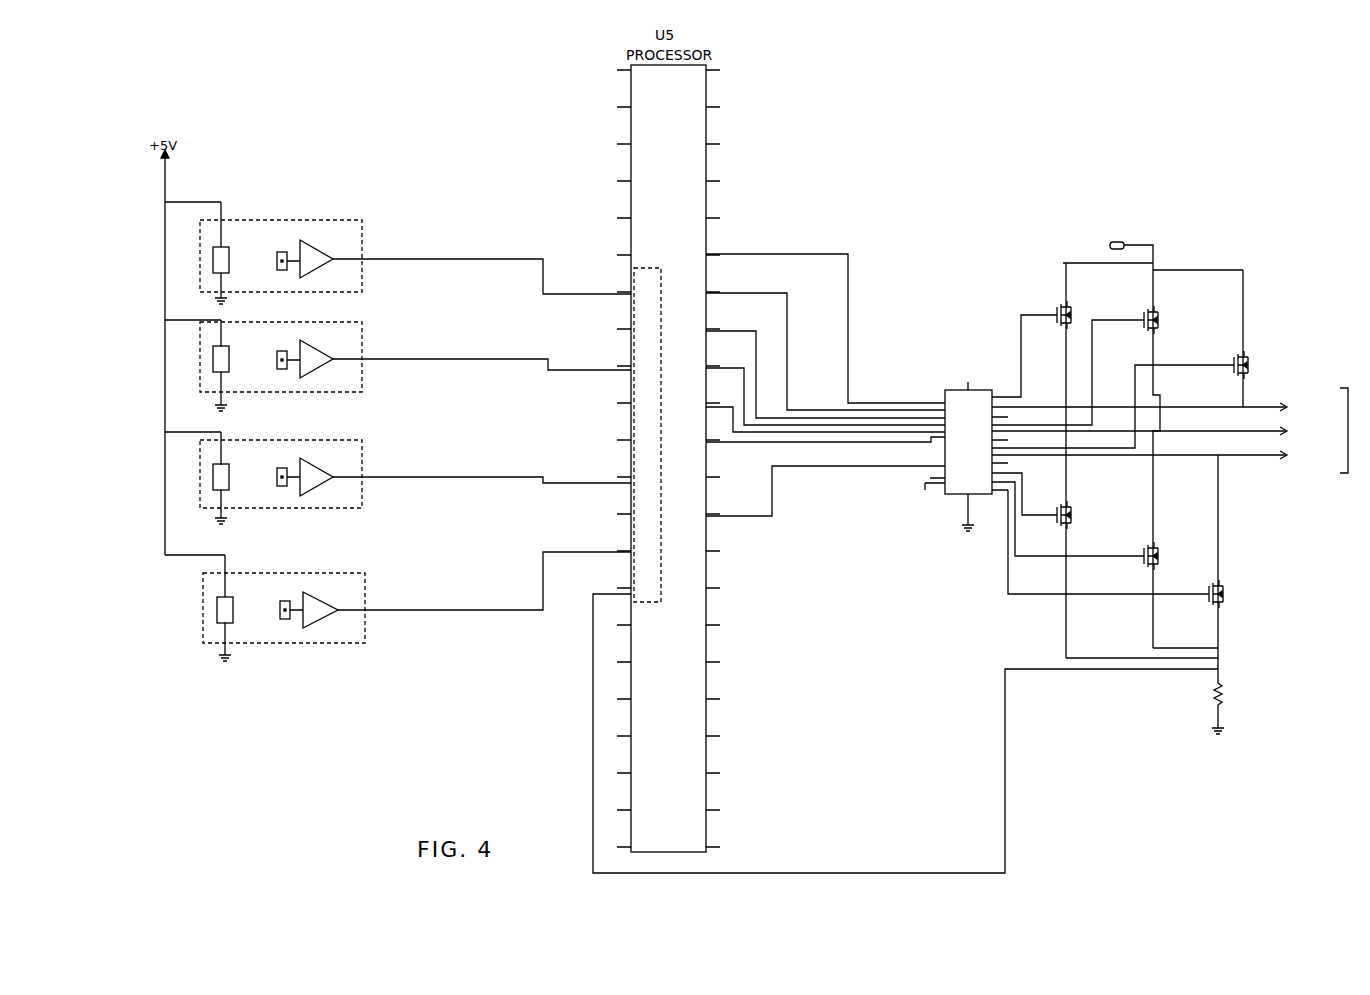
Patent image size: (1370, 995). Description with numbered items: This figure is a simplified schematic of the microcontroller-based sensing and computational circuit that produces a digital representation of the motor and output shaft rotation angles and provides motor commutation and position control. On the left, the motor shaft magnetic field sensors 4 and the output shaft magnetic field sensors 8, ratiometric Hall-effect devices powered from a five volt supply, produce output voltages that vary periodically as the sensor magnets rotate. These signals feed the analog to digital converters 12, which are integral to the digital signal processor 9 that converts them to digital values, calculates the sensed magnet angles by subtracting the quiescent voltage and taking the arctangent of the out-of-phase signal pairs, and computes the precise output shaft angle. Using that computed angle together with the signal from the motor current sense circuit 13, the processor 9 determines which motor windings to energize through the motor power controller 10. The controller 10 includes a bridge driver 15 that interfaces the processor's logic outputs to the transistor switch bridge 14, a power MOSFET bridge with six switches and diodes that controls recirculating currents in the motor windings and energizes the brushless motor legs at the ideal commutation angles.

The motor shaft magnetic field sensors 4 is at (340, 343).
The output shaft magnetic field sensors 8 is at (347, 493).
The digital signal processor 9 is at (695, 862).
The motor power controller 10 is at (1157, 218).
The analog to digital converters 12 is at (645, 303).
The motor current sense circuit 13 is at (1212, 703).
The transistor switch bridge 14 is at (1228, 572).
The bridge driver 15 is at (953, 377).